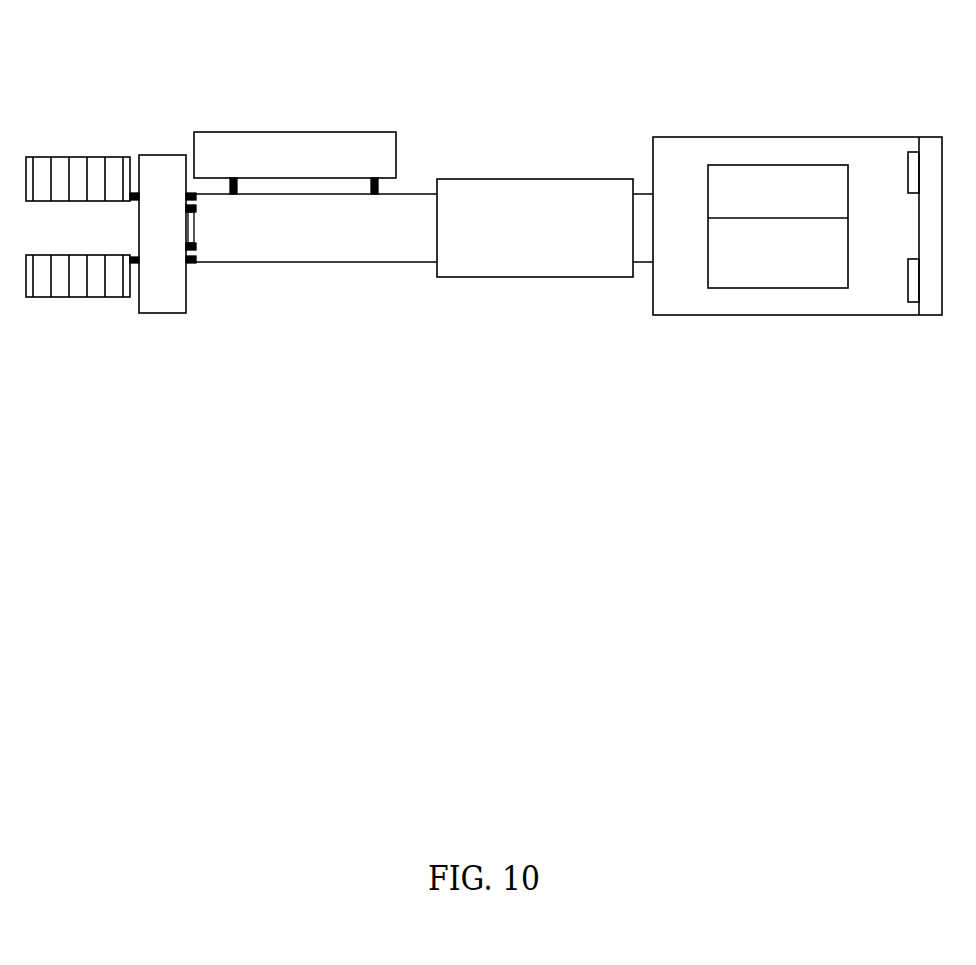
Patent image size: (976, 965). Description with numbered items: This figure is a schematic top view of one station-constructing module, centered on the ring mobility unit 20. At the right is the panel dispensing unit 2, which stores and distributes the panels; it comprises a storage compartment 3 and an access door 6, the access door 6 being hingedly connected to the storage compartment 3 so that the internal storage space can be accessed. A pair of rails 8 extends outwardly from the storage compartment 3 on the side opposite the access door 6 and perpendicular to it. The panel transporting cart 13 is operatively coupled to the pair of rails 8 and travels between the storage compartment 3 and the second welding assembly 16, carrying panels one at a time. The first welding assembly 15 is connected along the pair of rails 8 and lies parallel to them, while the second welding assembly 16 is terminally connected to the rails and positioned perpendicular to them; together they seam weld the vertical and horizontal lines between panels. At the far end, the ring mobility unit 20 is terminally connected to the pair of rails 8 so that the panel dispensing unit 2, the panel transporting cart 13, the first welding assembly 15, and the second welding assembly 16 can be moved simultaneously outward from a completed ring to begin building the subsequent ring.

The panel dispensing unit 2 is at (805, 86).
The storage compartment 3 is at (746, 324).
The access door 6 is at (930, 317).
The pair of rails 8 is at (309, 195).
The panel transporting cart 13 is at (565, 183).
The first welding assembly 15 is at (328, 138).
The second welding assembly 16 is at (160, 313).
The ring mobility unit 20 is at (80, 160).